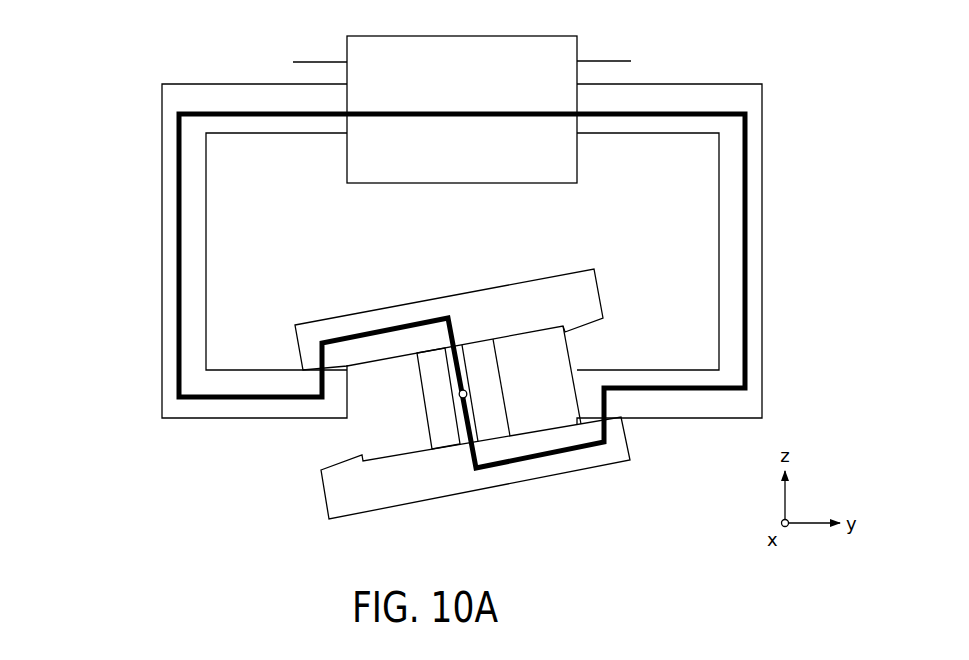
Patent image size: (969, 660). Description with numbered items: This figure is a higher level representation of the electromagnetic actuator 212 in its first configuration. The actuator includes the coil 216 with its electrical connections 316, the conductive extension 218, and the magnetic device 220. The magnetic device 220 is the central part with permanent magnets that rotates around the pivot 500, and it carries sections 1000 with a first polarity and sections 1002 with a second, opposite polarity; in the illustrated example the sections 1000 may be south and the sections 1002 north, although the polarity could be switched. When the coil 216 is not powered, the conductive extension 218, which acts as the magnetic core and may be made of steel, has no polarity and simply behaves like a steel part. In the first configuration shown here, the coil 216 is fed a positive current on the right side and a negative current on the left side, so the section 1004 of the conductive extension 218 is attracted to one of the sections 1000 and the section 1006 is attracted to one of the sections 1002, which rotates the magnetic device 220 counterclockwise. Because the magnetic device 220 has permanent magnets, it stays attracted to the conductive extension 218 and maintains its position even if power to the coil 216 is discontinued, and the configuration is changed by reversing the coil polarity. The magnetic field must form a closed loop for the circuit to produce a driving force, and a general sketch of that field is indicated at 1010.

The electromagnetic actuator 212 is at (809, 60).
The coil 216 is at (391, 34).
The conductive extension 218 is at (162, 153).
The magnetic device 220 is at (482, 381).
The electrical connections 316 is at (310, 62).
The pivot 500 is at (468, 393).
The sections with a first polarity 1000 is at (592, 333).
The sections with a second polarity 1002 is at (335, 452).
The section of the conductive extension 1004 is at (364, 413).
The section of the conductive extension 1006 is at (568, 397).
The magnetic field sketch 1010 is at (189, 112).